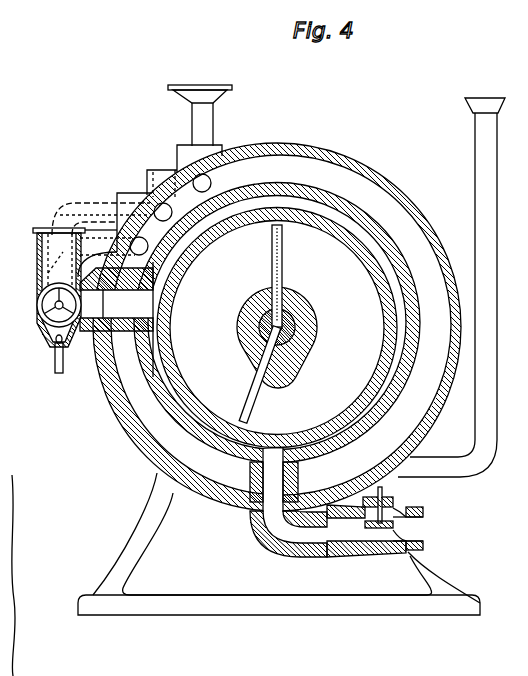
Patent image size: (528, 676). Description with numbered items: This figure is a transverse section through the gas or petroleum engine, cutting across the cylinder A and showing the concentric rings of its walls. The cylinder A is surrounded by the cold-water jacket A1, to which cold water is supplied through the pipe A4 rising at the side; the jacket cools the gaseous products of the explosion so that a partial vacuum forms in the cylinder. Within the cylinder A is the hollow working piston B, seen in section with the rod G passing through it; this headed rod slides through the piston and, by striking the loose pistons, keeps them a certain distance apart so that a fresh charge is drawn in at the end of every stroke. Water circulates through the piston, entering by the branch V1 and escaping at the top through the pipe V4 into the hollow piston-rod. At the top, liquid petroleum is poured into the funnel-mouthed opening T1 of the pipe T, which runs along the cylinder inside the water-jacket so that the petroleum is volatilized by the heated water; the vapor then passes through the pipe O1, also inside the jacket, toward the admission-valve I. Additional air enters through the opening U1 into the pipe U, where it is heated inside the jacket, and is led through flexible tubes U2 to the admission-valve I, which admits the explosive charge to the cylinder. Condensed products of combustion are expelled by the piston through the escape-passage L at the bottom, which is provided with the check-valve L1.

The cold-water jacket A1 is at (370, 172).
The cylinder A is at (372, 212).
The working piston B is at (370, 278).
The rod G is at (277, 337).
The pipe V4 is at (287, 276).
The branch V1 is at (260, 375).
The funnel-mouthed opening T1 is at (200, 118).
The pipe T is at (207, 183).
The opening U1 is at (162, 176).
The pipe U is at (168, 210).
The pipe O1 is at (119, 224).
The flexible tubes U2 is at (101, 210).
The admission-valve I is at (51, 300).
The escape-passage L is at (288, 502).
The check-valve L1 is at (375, 522).
The pipe A4 is at (486, 298).